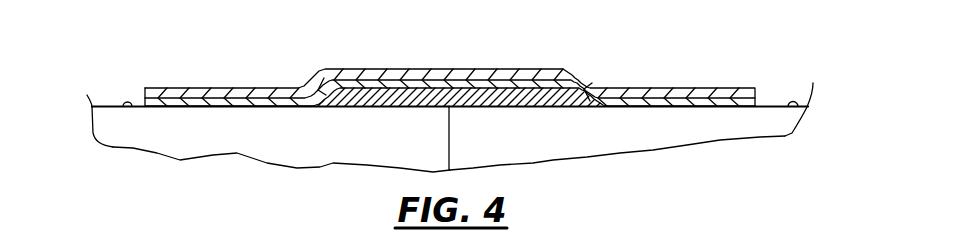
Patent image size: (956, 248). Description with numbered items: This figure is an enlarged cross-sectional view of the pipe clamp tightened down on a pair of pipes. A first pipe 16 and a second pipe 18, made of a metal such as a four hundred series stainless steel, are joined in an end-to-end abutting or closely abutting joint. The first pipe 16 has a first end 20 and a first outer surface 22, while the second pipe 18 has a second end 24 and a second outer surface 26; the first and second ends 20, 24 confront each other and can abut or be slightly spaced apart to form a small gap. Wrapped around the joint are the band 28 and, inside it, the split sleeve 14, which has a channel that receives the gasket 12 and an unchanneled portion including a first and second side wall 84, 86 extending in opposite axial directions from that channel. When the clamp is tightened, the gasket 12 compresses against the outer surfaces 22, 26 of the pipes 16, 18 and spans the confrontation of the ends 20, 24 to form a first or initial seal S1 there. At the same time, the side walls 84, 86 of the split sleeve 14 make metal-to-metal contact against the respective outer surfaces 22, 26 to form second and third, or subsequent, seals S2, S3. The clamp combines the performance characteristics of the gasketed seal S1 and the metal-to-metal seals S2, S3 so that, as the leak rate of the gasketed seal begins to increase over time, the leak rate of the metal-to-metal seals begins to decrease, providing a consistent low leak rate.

The gasket 12 is at (518, 109).
The split sleeve 14 is at (651, 109).
The first pipe 16 is at (120, 104).
The second pipe 18 is at (774, 105).
The first end 20 is at (435, 160).
The first outer surface 22 is at (127, 107).
The second end 24 is at (467, 155).
The second outer surface 26 is at (800, 117).
The band 28 is at (708, 88).
The first side wall 84 is at (210, 103).
The second side wall 86 is at (660, 100).
The first seal S1 is at (435, 109).
The second seal S2 is at (240, 109).
The third seal S3 is at (608, 109).